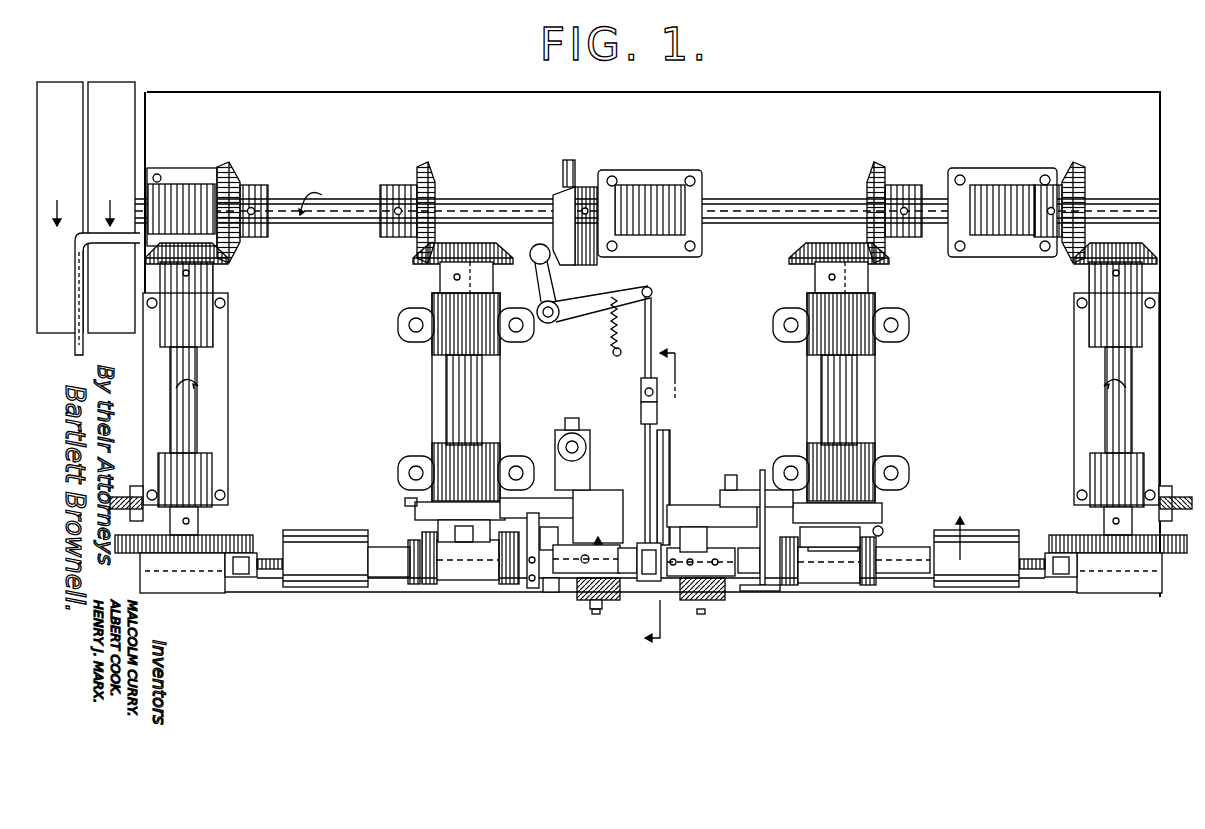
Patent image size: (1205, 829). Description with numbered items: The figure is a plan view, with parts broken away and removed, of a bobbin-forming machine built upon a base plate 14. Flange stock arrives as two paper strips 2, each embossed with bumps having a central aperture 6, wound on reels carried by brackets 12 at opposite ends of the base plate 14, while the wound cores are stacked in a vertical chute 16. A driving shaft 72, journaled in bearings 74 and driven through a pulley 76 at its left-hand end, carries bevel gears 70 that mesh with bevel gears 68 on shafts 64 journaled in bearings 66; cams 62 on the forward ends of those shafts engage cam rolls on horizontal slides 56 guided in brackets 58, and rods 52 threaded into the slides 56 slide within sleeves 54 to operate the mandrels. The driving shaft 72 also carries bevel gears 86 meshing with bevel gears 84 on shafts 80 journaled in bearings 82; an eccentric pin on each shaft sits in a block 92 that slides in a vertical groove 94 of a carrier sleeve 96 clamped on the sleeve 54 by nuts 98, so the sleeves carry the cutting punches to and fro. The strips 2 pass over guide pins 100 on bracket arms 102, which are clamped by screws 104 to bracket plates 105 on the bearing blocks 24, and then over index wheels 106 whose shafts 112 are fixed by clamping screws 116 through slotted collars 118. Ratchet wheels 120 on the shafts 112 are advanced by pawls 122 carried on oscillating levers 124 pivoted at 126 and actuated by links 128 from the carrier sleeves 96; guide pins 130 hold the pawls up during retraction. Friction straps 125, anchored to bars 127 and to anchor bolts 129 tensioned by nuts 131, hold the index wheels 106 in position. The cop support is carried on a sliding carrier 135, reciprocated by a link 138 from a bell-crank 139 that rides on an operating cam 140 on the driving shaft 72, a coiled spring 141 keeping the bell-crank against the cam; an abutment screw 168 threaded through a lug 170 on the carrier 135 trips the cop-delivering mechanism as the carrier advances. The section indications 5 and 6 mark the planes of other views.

The strips 2 is at (900, 574).
The section line 5 is at (770, 525).
The central aperture 6 is at (667, 497).
The brackets 12 is at (118, 497).
The base plate 14 is at (503, 92).
The vertical magazine or chute 16 is at (645, 582).
The bearing blocks or brackets 24 is at (322, 530).
The rods 52 is at (270, 556).
The sleeves 54 is at (385, 545).
The horizontal slides 56 is at (205, 580).
The brackets 58 is at (182, 594).
The grooved-operating cams 62 is at (242, 533).
The shafts 64 is at (197, 398).
The bearings 66 is at (212, 322).
The bevel gears 68 is at (226, 258).
The bevel gears 70 is at (238, 178).
The driving shaft 72 is at (152, 197).
The bearings 74 is at (187, 190).
The pulley 76 is at (100, 82).
The shafts 80 is at (455, 400).
The bearings 82 is at (435, 325).
The bevel gears 84 is at (425, 263).
The bevel gears 86 is at (428, 176).
The block 92 is at (455, 583).
The vertical groove 94 is at (428, 584).
The carrier sleeve 96 is at (505, 585).
The clamping collars or nuts 98 is at (465, 542).
The horizontal guide pins 100 is at (526, 590).
The bracket arms 102 is at (548, 592).
The clamping screws 104 is at (537, 588).
The bracket plates 105 is at (590, 606).
The index wheels 106 is at (590, 490).
The shafts 112 is at (692, 527).
The clamping screws 116 is at (596, 614).
The collars 118 is at (603, 600).
The ratchet wheels 120 is at (585, 555).
The pawls 122 is at (490, 510).
The oscillating levers 124 is at (733, 475).
The friction straps 125 is at (704, 600).
The pivot 126 is at (762, 470).
The horizontal bars 127 is at (540, 536).
The links 128 is at (745, 490).
The anchor bolts 129 is at (770, 590).
The guide pins 130 is at (740, 522).
The nuts 131 is at (530, 590).
The sliding carrier 135 is at (641, 412).
The link 138 is at (652, 335).
The bell-crank 139 is at (585, 325).
The operating cam 140 is at (566, 165).
The coiled spring 141 is at (609, 340).
The abutment screw 168 is at (668, 460).
The lug 170 is at (641, 398).